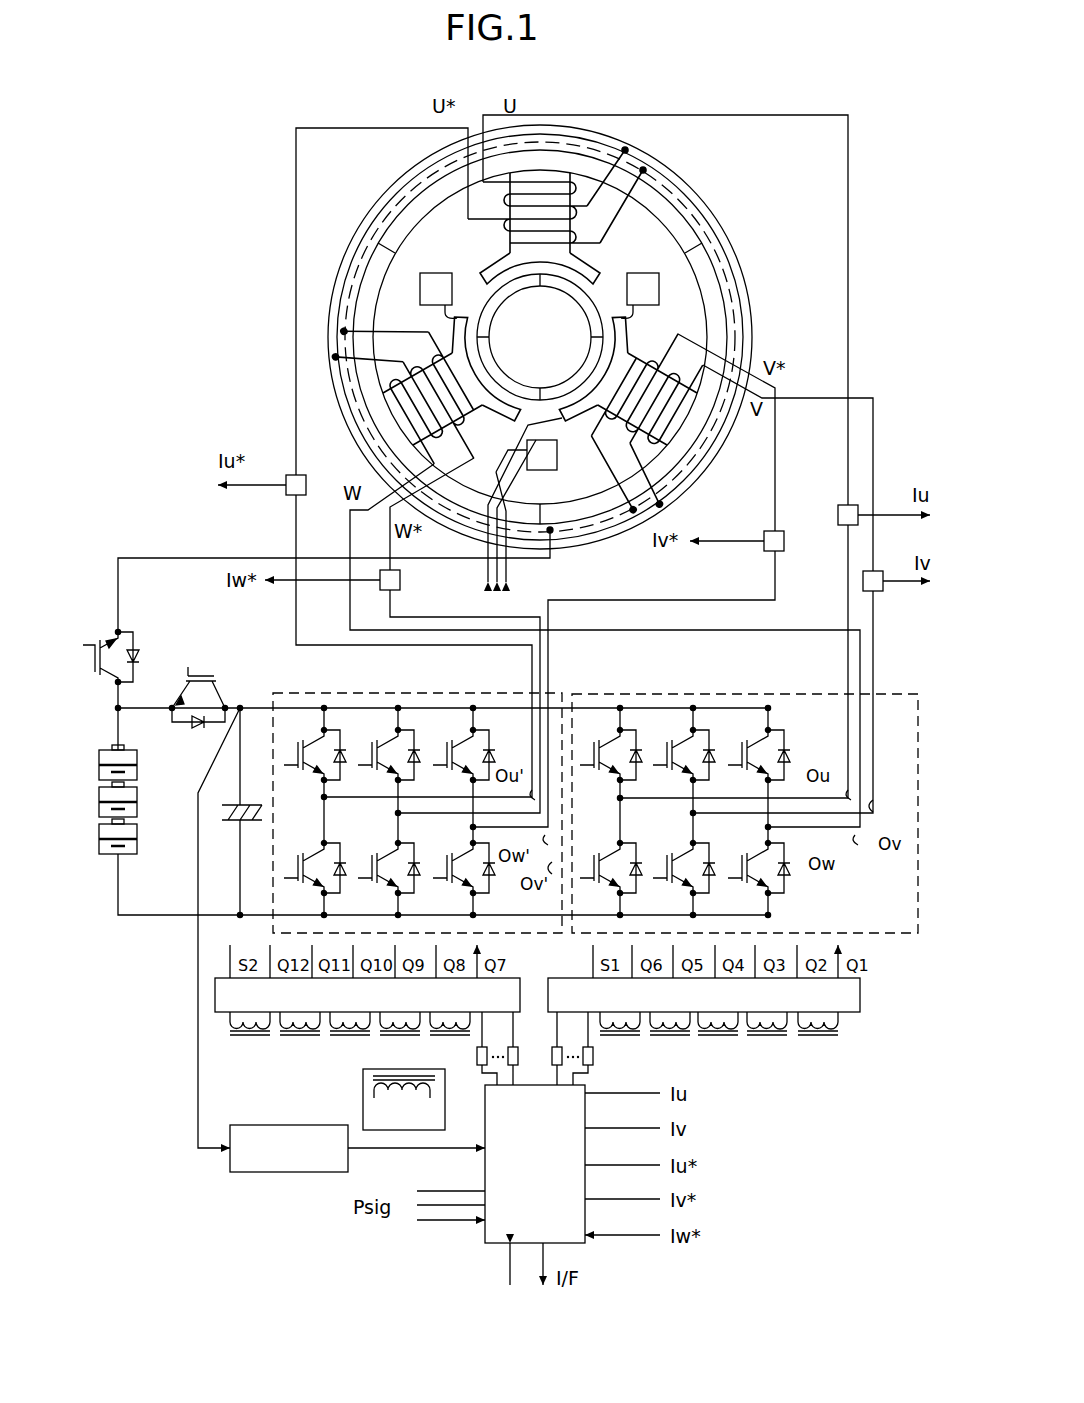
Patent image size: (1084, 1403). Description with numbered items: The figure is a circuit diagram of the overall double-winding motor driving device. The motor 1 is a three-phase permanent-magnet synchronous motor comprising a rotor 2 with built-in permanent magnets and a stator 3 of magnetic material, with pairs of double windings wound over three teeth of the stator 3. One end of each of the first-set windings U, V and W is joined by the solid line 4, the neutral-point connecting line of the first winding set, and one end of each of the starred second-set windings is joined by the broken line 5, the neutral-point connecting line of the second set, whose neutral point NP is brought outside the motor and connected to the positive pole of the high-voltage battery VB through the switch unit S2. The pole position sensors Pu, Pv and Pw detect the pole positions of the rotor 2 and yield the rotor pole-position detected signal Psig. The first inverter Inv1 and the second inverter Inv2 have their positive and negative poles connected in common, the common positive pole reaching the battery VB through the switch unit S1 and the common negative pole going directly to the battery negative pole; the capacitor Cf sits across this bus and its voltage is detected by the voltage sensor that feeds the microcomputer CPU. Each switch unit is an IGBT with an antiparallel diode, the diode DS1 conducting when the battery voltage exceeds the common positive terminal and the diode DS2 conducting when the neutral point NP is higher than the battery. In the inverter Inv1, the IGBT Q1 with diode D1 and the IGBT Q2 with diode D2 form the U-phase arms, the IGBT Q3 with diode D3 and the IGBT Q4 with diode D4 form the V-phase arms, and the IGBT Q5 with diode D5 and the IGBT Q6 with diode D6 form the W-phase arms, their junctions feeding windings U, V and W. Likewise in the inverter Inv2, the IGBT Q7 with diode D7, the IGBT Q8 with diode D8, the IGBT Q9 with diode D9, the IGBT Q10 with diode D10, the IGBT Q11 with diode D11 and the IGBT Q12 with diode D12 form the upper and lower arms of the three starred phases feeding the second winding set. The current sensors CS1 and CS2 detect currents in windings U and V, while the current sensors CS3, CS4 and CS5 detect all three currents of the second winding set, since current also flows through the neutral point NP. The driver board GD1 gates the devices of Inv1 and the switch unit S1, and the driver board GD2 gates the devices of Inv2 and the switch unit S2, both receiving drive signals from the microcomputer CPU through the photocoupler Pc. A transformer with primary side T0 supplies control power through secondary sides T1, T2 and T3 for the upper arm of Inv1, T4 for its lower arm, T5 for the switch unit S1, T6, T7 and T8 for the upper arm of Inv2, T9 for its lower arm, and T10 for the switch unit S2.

The motor 1 is at (688, 186).
The rotor 2 is at (490, 308).
The stator 3 is at (722, 292).
The solid line 4 is at (713, 220).
The broken line 5 is at (728, 252).
The pole position sensor Pw is at (424, 295).
The pole position sensor Pu is at (654, 295).
The pole position sensor Pv is at (541, 457).
The rotor pole-position detected signal Psig is at (517, 515).
The neutral point NP is at (340, 579).
The current sensor CS1 is at (864, 502).
The current sensor CS2 is at (896, 592).
The current sensor CS3 is at (262, 500).
The current sensor CS4 is at (737, 527).
The current sensor CS5 is at (354, 581).
The switch unit S1 is at (200, 679).
The switch unit S2 is at (85, 657).
The diode DS1 is at (194, 732).
The diode DS2 is at (148, 656).
The high-voltage battery VB is at (137, 799).
The capacitor Cf is at (236, 825).
The first three-phase inverter Inv1 is at (676, 693).
The second three-phase inverter Inv2 is at (370, 693).
The IGBT Q1 is at (601, 760).
The IGBT Q2 is at (601, 873).
The IGBT Q3 is at (674, 760).
The IGBT Q4 is at (674, 873).
The IGBT Q5 is at (749, 760).
The IGBT Q6 is at (749, 873).
The IGBT Q7 is at (305, 760).
The IGBT Q8 is at (305, 873).
The IGBT Q9 is at (379, 760).
The IGBT Q10 is at (378, 873).
The IGBT Q11 is at (453, 760).
The IGBT Q12 is at (453, 873).
The diode D1 is at (624, 755).
The diode D2 is at (624, 868).
The diode D3 is at (697, 755).
The diode D4 is at (697, 868).
The diode D5 is at (772, 755).
The diode D6 is at (772, 868).
The diode D7 is at (328, 755).
The diode D8 is at (328, 868).
The diode D9 is at (402, 755).
The diode D10 is at (391, 860).
The diode D11 is at (466, 747).
The diode D12 is at (466, 860).
The driver board GD1 is at (704, 978).
The driver board GD2 is at (367, 978).
The primary side of the transformer T0 is at (404, 1099).
The secondary side of the transformer T1 is at (818, 1036).
The secondary side of the transformer T2 is at (767, 1036).
The secondary side of the transformer T3 is at (718, 1036).
The secondary side of the transformer T4 is at (670, 1036).
The secondary side of the transformer T5 is at (620, 1036).
The secondary side of the transformer T6 is at (450, 1036).
The secondary side of the transformer T7 is at (400, 1036).
The secondary side of the transformer T8 is at (350, 1036).
The secondary side of the transformer T9 is at (300, 1036).
The secondary side of the transformer T10 is at (250, 1036).
The photocoupler Pc is at (540, 1059).
The microcomputer CPU is at (535, 1164).